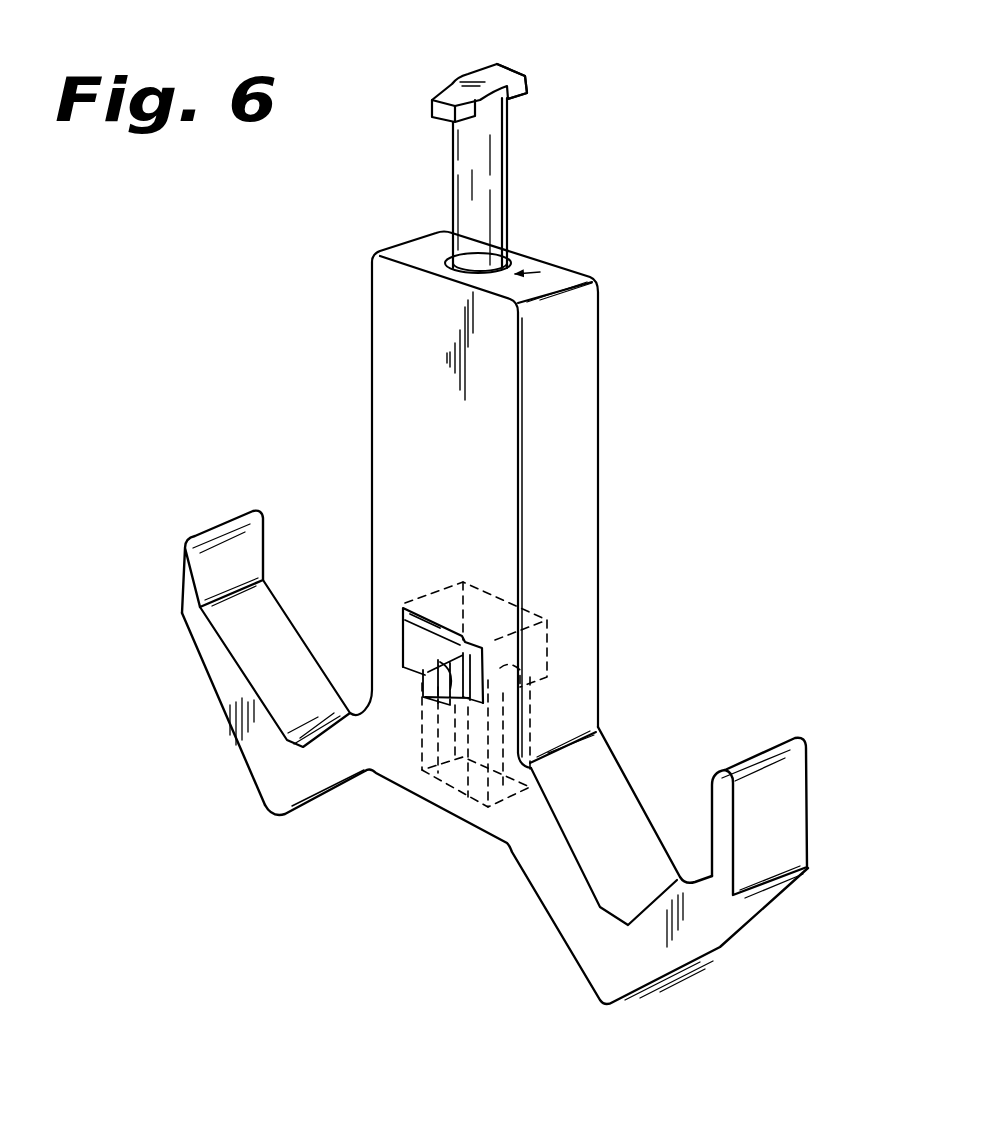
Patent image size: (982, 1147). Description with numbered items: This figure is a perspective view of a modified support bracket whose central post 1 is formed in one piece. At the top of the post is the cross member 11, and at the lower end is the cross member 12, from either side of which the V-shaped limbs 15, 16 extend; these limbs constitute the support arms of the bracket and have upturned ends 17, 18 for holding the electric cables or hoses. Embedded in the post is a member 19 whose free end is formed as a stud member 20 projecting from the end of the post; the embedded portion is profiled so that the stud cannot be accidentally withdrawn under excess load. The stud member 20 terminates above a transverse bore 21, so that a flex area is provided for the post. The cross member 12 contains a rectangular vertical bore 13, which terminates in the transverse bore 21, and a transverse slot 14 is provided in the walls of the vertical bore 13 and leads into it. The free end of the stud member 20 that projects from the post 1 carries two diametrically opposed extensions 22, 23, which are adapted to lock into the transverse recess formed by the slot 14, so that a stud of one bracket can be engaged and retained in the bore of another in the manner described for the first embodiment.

The central post 1 is at (624, 390).
The cross member 11 is at (408, 248).
The cross member 12 is at (477, 831).
The vertical bore 13 is at (420, 750).
The transverse slot 14 is at (418, 660).
The V-shaped limb 15 is at (201, 706).
The V-shaped limb 16 is at (551, 968).
The upturned end 17 is at (178, 577).
The upturned end 18 is at (785, 790).
The member 19 is at (536, 140).
The stud member 20 is at (503, 220).
The transverse bore 21 is at (405, 608).
The extension 22 is at (428, 110).
The extension 23 is at (526, 82).